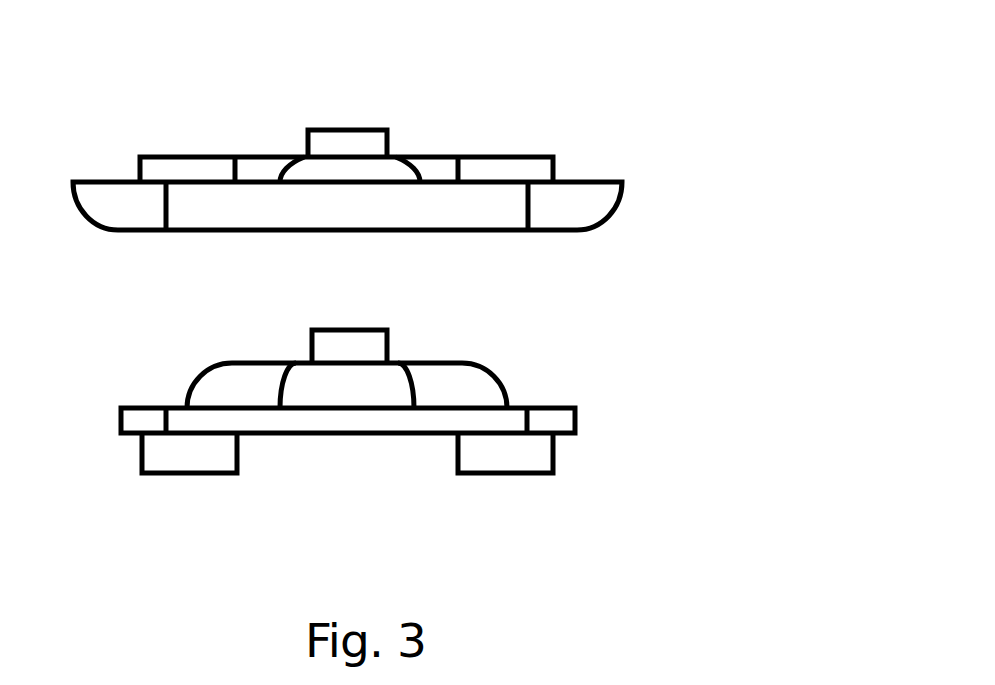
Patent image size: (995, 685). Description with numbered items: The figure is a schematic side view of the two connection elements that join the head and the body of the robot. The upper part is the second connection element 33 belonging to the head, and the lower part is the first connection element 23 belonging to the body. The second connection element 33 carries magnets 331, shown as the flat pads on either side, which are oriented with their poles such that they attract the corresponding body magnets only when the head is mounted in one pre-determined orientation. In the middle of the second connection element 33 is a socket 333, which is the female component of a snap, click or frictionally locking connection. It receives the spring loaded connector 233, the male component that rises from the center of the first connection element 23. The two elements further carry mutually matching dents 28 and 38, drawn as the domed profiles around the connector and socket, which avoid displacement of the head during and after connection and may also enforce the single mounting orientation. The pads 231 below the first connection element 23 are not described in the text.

The second connection element 33 is at (610, 215).
The magnets 331 is at (193, 168).
The socket 333 is at (355, 128).
The dents 38 is at (328, 172).
The first connection element 23 is at (575, 422).
The electrode pad 231 is at (202, 458).
The spring loaded connector 233 is at (355, 348).
The dents 28 is at (292, 392).